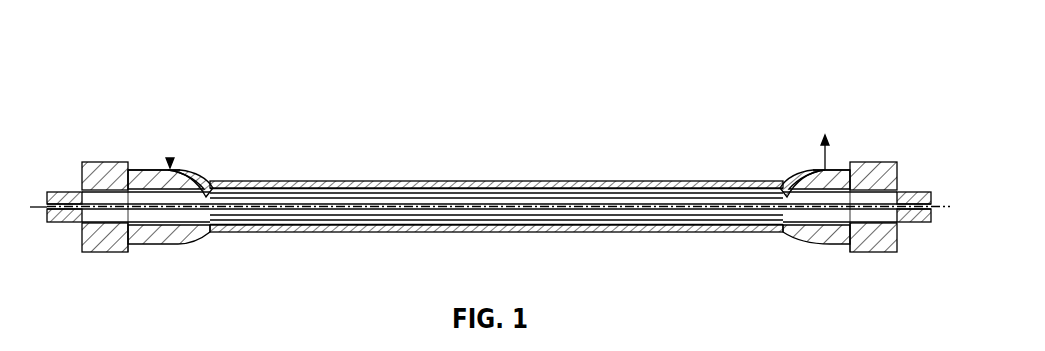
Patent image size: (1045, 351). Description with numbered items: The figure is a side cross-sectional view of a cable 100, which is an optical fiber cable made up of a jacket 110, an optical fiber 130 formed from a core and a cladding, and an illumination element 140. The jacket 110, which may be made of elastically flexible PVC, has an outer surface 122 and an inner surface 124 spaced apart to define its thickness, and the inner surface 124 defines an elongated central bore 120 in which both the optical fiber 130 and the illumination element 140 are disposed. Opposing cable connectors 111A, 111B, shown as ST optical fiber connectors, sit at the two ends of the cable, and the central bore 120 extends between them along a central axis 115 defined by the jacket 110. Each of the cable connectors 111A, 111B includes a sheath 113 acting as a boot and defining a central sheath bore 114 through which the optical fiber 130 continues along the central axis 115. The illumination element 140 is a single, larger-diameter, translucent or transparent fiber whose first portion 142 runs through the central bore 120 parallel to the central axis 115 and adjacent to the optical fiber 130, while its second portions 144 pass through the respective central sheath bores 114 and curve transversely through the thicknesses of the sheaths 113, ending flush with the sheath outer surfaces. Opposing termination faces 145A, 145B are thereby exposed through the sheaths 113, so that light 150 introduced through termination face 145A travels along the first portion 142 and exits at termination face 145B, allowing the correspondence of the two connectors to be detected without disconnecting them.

The cable 100 is at (123, 43).
The jacket 110 is at (321, 173).
The cable connector 111A is at (130, 279).
The cable connector 111B is at (813, 258).
The sheath 113 is at (177, 243).
The central sheath bore 114 is at (95, 252).
The central axis 115 is at (33, 207).
The central bore 120 is at (373, 182).
The outer surface 122 is at (433, 195).
The inner surface 124 is at (445, 196).
The optical fiber 130 is at (150, 203).
The illumination element 140 is at (548, 181).
The first portion 142 is at (595, 196).
The second portions 144 is at (182, 170).
The termination face 145A is at (181, 170).
The termination face 145B is at (827, 172).
The light 150 is at (170, 158).